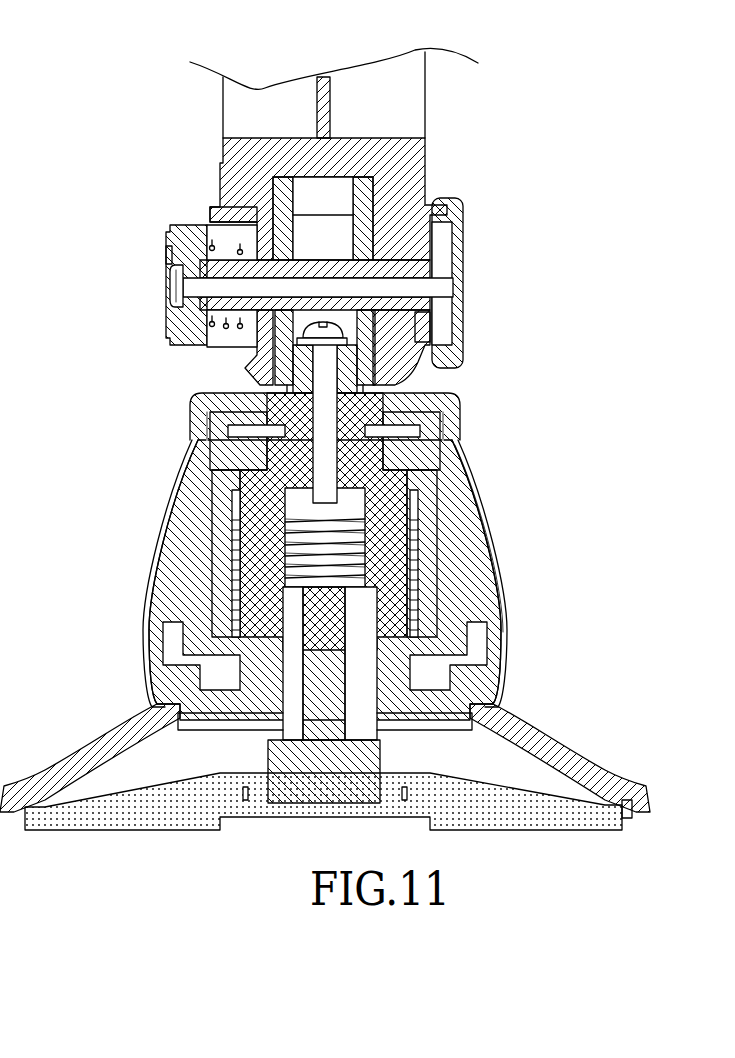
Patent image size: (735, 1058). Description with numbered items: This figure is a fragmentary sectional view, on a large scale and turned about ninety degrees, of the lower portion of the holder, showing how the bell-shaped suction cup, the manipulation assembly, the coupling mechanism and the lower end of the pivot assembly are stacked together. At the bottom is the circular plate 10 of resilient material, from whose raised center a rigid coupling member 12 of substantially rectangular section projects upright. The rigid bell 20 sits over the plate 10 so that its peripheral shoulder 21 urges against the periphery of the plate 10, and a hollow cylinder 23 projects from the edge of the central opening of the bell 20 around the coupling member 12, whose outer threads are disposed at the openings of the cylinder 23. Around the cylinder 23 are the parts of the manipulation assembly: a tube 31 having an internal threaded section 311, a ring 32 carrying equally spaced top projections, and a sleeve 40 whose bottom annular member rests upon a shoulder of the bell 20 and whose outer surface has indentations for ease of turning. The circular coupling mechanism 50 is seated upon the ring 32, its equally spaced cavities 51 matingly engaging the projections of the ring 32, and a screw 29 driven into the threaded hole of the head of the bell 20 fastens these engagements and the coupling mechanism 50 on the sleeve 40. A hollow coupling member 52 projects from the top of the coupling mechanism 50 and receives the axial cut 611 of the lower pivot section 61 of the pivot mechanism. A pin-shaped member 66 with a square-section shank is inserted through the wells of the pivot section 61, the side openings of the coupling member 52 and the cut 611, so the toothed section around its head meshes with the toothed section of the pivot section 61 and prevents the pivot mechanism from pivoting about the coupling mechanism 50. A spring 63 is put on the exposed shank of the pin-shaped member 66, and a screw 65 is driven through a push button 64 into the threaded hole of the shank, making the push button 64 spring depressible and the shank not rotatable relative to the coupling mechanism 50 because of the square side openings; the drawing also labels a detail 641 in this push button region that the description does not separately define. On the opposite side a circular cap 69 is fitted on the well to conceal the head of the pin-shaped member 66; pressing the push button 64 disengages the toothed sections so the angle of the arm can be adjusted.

The circular plate 10 is at (498, 815).
The coupling member 12 is at (284, 766).
The bell 20 is at (547, 733).
The peripheral shoulder 21 is at (630, 818).
The hollow cylinder 23 is at (222, 420).
The screw 29 is at (325, 367).
The tube 31 is at (212, 525).
The internal threaded section 311 is at (497, 572).
The ring 32 is at (218, 448).
The sleeve 40 is at (492, 518).
The coupling mechanism 50 is at (452, 422).
The cavities 51 is at (477, 412).
The hollow coupling member 52 is at (395, 181).
The lower pivot section 61 is at (447, 221).
The axial cut 611 is at (311, 188).
The spring 63 is at (201, 225).
The push button 64 is at (170, 325).
The spring hooks 641 is at (214, 333).
The screw 65 is at (171, 283).
The pin-shaped member 66 is at (167, 250).
The circular cap 69 is at (462, 295).